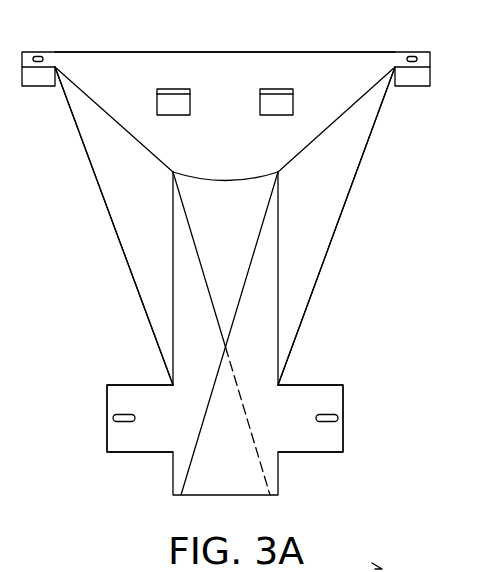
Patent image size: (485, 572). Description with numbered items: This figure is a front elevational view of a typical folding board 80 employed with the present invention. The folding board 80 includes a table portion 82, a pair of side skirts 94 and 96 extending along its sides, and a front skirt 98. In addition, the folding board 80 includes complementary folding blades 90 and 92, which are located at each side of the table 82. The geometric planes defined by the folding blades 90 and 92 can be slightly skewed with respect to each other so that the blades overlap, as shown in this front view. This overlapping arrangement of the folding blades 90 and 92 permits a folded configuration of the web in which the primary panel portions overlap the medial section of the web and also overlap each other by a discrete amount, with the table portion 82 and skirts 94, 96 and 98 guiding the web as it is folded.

The folding board 80 is at (354, 22).
The table portion 82 is at (218, 66).
The folding blade 90 is at (189, 339).
The folding blade 92 is at (262, 339).
The side skirt 94 is at (128, 214).
The side skirt 96 is at (318, 214).
The front skirt 98 is at (221, 181).